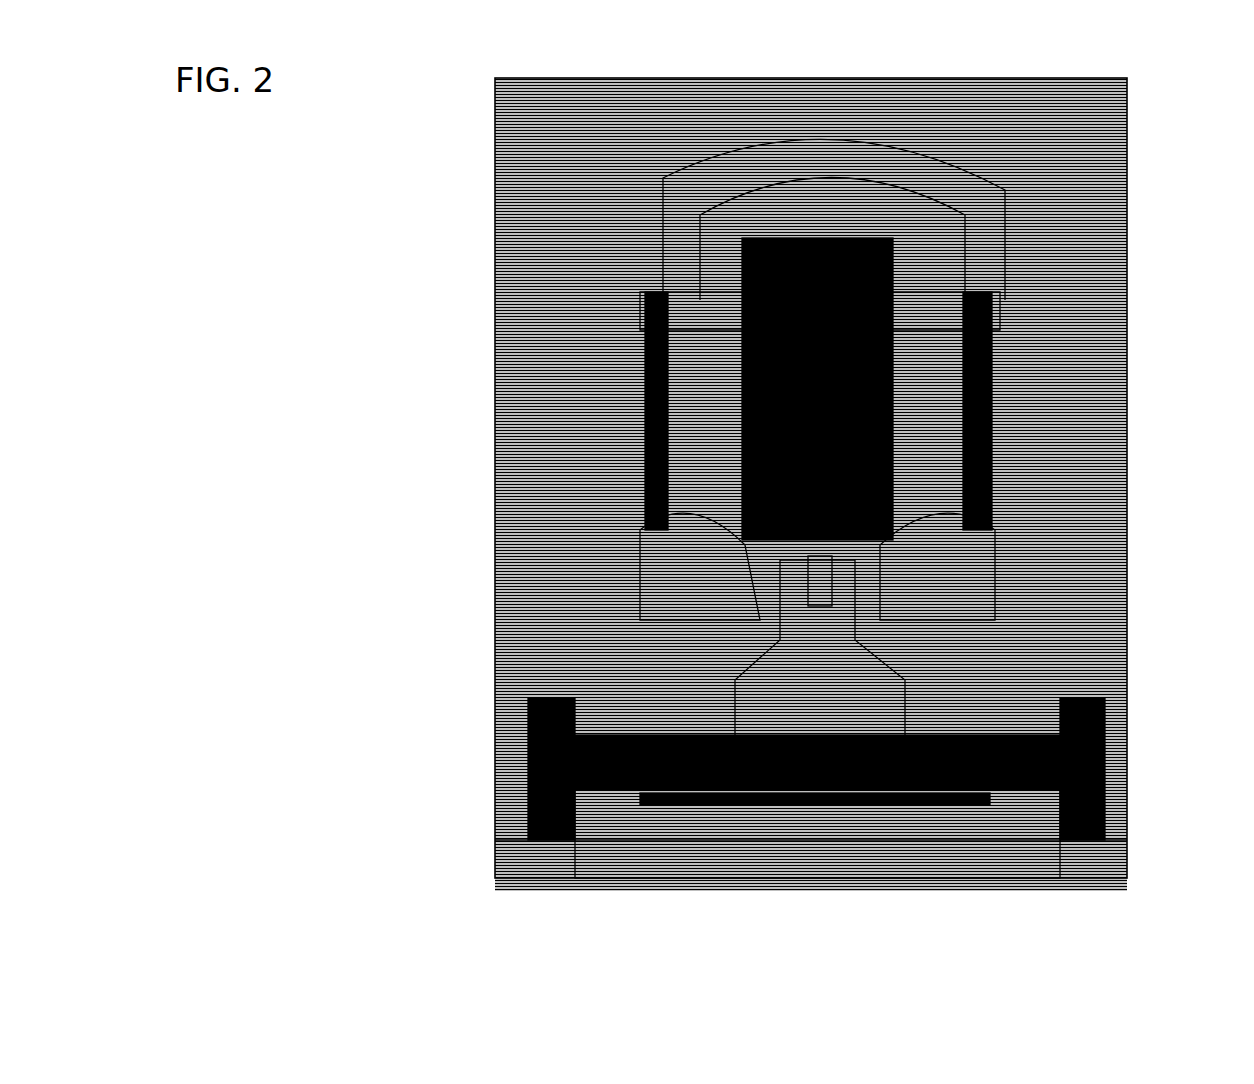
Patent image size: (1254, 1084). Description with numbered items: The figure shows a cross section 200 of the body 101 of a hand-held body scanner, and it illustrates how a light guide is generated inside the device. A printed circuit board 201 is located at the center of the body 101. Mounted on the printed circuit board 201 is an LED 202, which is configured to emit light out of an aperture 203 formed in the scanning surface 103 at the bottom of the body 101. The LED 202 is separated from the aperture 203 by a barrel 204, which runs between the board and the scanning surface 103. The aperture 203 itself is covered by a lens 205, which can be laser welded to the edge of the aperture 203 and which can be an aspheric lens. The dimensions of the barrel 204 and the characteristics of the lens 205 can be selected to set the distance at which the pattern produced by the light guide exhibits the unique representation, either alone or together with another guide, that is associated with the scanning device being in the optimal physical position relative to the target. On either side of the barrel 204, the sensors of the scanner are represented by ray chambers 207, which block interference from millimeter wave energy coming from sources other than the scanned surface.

The cross section 200 is at (561, 125).
The body 101 is at (1033, 240).
The scanning surface 103 is at (604, 878).
The printed circuit board 201 is at (800, 540).
The LED 202 is at (820, 592).
The aperture 203 is at (832, 858).
The barrel 204 is at (800, 676).
The lens 205 is at (813, 800).
The ray chambers 207 is at (873, 551).